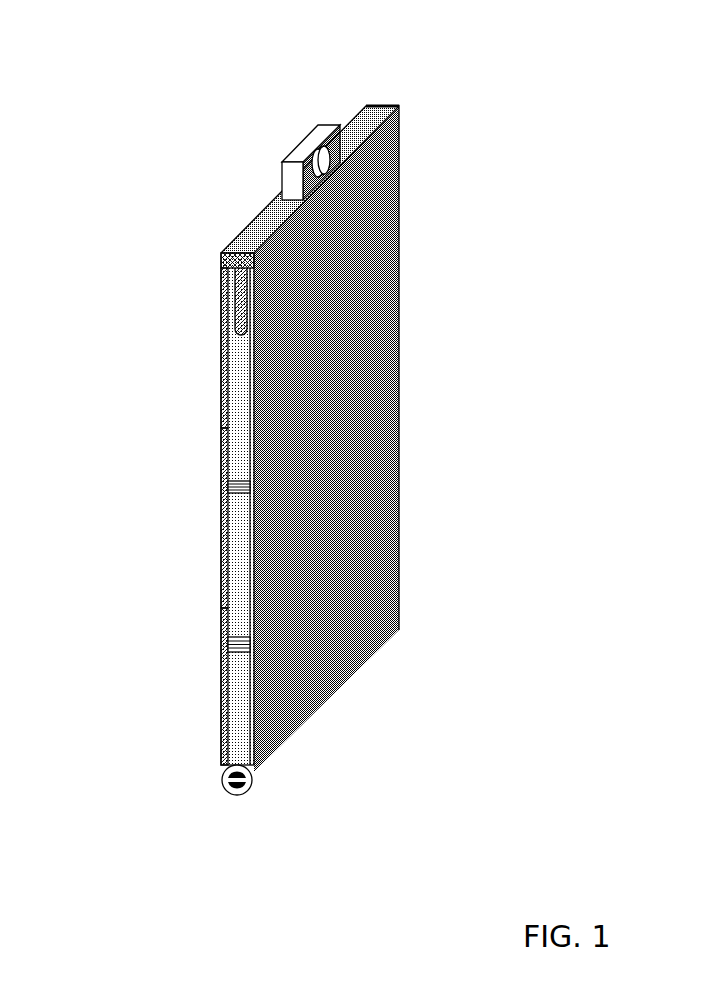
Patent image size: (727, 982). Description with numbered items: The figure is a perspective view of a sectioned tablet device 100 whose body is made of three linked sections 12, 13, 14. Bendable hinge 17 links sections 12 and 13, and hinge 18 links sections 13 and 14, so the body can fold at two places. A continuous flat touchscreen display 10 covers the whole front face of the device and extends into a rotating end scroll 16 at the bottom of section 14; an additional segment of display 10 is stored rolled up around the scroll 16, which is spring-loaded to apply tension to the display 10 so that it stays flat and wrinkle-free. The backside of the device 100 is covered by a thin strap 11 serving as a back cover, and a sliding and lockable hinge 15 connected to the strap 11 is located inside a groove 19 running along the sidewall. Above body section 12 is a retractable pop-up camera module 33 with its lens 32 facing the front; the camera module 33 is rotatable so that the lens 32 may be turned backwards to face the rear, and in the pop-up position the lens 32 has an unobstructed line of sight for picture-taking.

The sectioned tablet device 100 is at (323, 412).
The flat touchscreen display 10 is at (386, 405).
The strap 11 is at (157, 513).
The section 12 is at (222, 377).
The section 13 is at (222, 568).
The section 14 is at (222, 720).
The sliding and lockable hinge 15 is at (399, 106).
The rotating end scroll 16 is at (253, 783).
The bendable hinge 17 is at (228, 487).
The hinge 18 is at (228, 645).
The groove 19 is at (235, 293).
The lens 32 is at (340, 165).
The pop-up camera module 33 is at (371, 170).